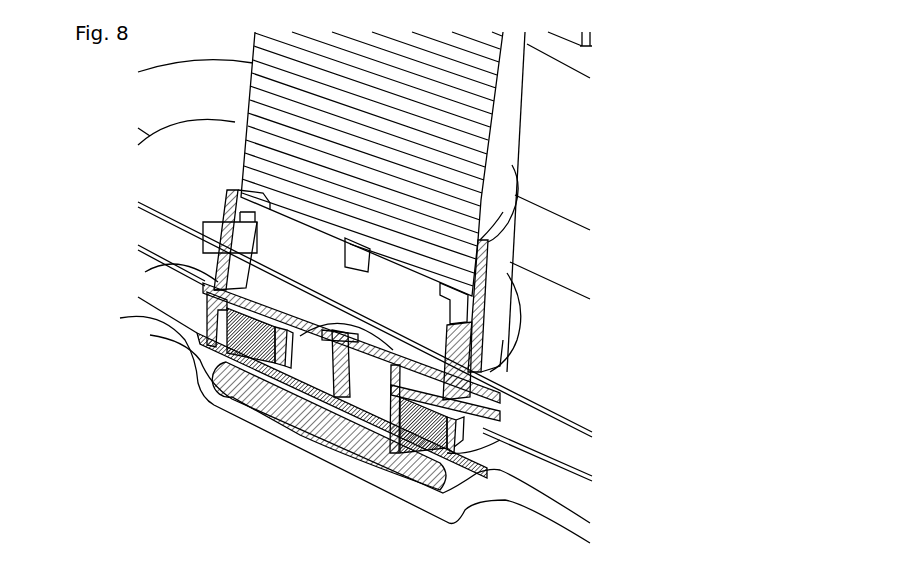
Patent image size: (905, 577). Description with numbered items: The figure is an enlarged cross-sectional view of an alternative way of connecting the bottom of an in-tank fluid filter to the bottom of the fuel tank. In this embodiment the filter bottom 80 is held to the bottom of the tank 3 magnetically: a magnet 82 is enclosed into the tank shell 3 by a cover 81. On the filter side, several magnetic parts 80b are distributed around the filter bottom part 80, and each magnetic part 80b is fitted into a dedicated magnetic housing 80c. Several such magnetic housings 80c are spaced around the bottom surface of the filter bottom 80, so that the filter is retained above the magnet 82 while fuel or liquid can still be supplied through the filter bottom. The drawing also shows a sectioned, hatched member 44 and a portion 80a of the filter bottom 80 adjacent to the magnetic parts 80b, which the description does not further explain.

The tank 3 is at (547, 508).
The pillar member 44 is at (498, 268).
The filter bottom 80 is at (212, 250).
The engaging portion of clip 80a is at (228, 312).
The magnetic parts 80b is at (478, 408).
The magnetic housings 80c is at (473, 443).
The cover 81 is at (387, 421).
The magnet 82 is at (390, 453).